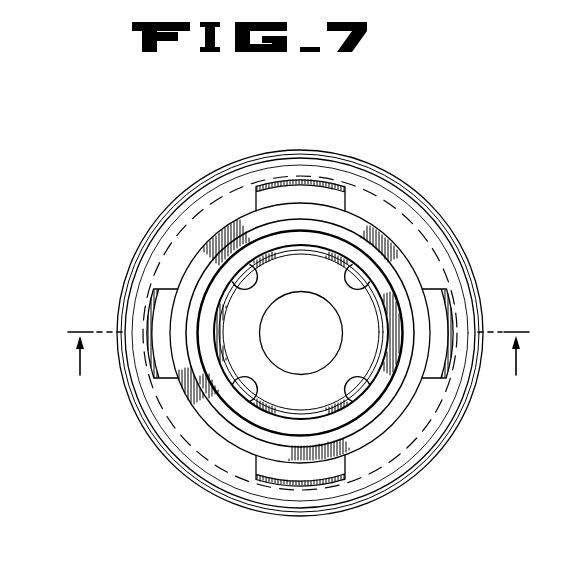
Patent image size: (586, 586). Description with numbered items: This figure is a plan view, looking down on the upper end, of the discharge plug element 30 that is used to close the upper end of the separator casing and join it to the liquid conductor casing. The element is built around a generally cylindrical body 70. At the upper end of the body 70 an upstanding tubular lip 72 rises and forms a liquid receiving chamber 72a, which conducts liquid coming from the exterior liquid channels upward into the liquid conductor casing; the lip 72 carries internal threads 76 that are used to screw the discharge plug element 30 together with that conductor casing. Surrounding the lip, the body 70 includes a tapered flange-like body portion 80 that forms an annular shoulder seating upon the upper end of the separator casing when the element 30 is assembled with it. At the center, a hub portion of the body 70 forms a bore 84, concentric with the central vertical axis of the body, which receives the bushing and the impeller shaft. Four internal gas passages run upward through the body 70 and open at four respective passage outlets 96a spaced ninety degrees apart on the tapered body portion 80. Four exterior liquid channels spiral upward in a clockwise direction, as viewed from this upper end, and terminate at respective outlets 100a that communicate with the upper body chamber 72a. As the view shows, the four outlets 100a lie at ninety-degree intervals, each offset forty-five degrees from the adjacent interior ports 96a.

The discharge plug element 30 is at (88, 208).
The generally cylindrical body 70 is at (438, 236).
The upstanding tubular lip 72 is at (367, 448).
The liquid receiving chamber 72a is at (242, 359).
The internal threads 76 is at (365, 422).
The tapered flange-like body portion 80 is at (363, 497).
The bore 84 is at (266, 318).
The passage outlets 96a is at (303, 197).
The outlets of liquid channels 100a is at (357, 273).